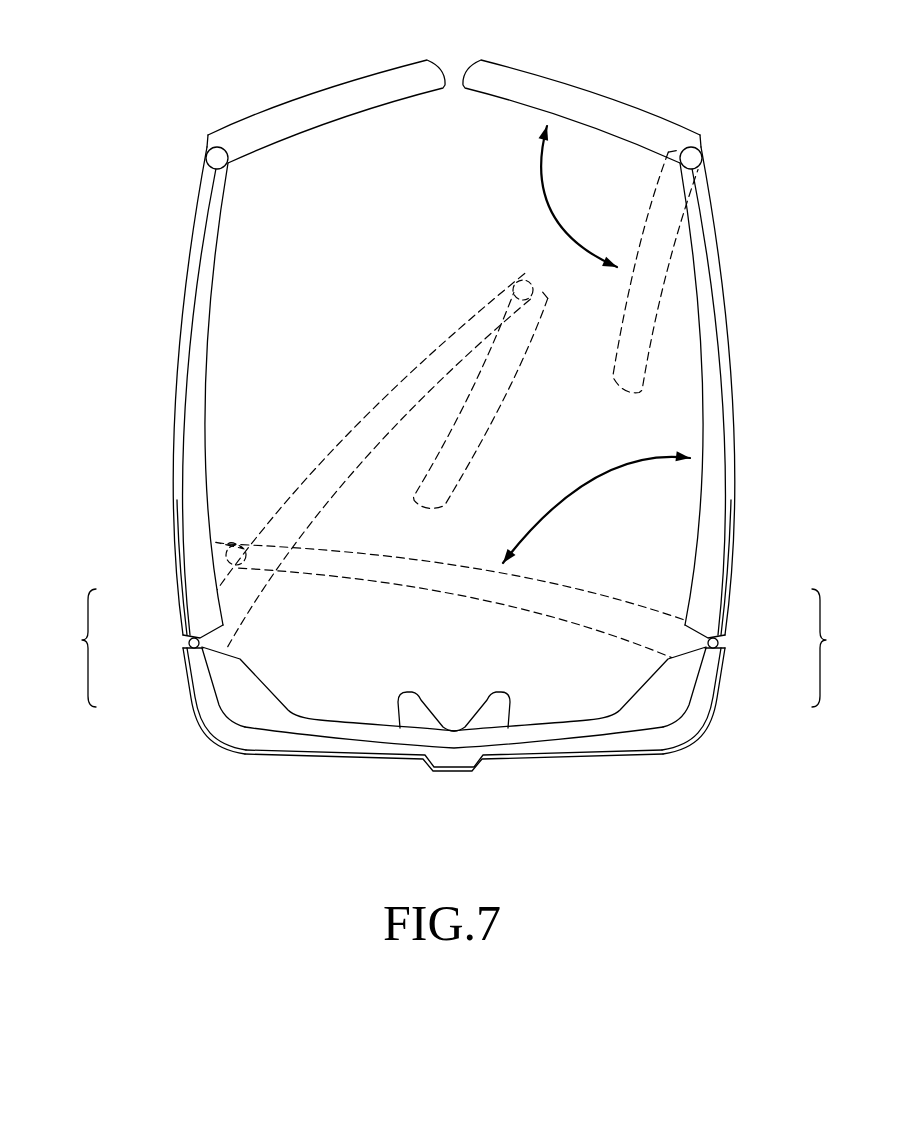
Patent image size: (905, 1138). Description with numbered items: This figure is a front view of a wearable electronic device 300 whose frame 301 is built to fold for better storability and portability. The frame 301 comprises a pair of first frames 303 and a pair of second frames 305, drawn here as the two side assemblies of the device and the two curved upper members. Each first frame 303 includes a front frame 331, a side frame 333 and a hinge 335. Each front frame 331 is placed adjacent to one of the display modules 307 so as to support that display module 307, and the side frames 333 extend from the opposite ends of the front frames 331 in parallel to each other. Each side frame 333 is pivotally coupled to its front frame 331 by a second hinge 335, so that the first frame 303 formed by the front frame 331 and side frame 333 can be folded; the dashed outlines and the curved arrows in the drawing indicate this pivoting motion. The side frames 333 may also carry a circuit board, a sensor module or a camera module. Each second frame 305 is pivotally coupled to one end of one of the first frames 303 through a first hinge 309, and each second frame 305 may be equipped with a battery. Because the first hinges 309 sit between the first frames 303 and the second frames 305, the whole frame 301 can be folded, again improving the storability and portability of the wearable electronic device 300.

The wearable electronic device 300 is at (448, 430).
The frame 301 is at (450, 753).
The first frame 303 is at (448, 648).
The second frame 305 is at (287, 115).
The display module 307 is at (242, 705).
The first hinge 309 is at (207, 158).
The front frame 331 is at (200, 675).
The side frame 333 is at (188, 582).
The second hinge 335 is at (187, 643).